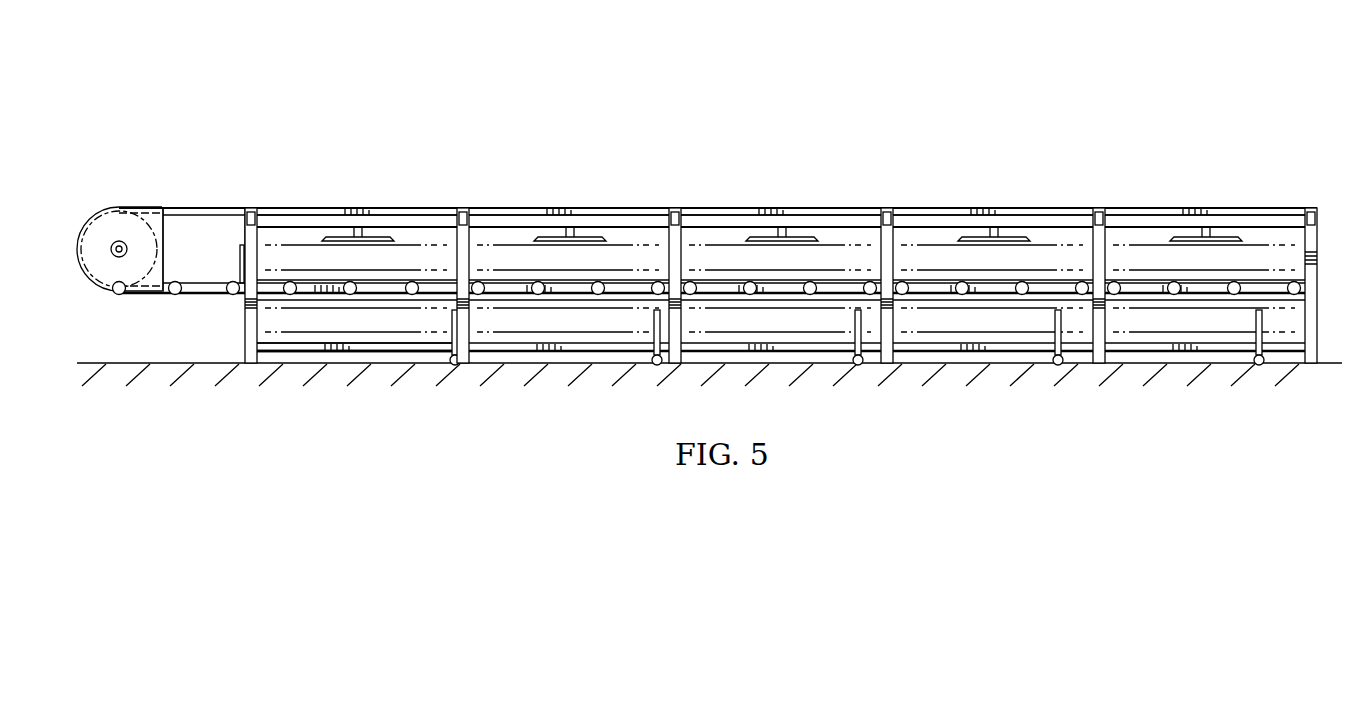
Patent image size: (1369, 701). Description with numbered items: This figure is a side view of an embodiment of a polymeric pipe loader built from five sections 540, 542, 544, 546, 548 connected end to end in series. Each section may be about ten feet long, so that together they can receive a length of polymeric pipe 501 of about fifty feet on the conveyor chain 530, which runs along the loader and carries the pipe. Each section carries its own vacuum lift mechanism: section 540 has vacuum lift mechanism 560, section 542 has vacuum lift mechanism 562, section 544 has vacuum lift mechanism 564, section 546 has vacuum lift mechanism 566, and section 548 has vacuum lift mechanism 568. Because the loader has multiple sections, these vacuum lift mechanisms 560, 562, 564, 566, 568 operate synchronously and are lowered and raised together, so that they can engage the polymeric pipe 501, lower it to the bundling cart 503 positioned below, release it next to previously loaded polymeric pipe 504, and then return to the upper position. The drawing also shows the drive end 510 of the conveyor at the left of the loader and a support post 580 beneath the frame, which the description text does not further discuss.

The length of polymeric pipe 501 is at (288, 258).
The bundling cart 503 is at (392, 345).
The loaded polymeric pipe 504 is at (308, 320).
The drive sprocket end 510 is at (179, 207).
The conveyor chain 530 is at (240, 282).
The section 540 is at (338, 208).
The section 542 is at (542, 208).
The section 544 is at (755, 208).
The section 546 is at (970, 208).
The section 548 is at (1172, 208).
The vacuum lift mechanism 560 is at (381, 238).
The vacuum lift mechanism 562 is at (594, 238).
The vacuum lift mechanism 564 is at (806, 238).
The vacuum lift mechanism 566 is at (1019, 238).
The vacuum lift mechanism 568 is at (1233, 238).
The support post 580 is at (247, 325).